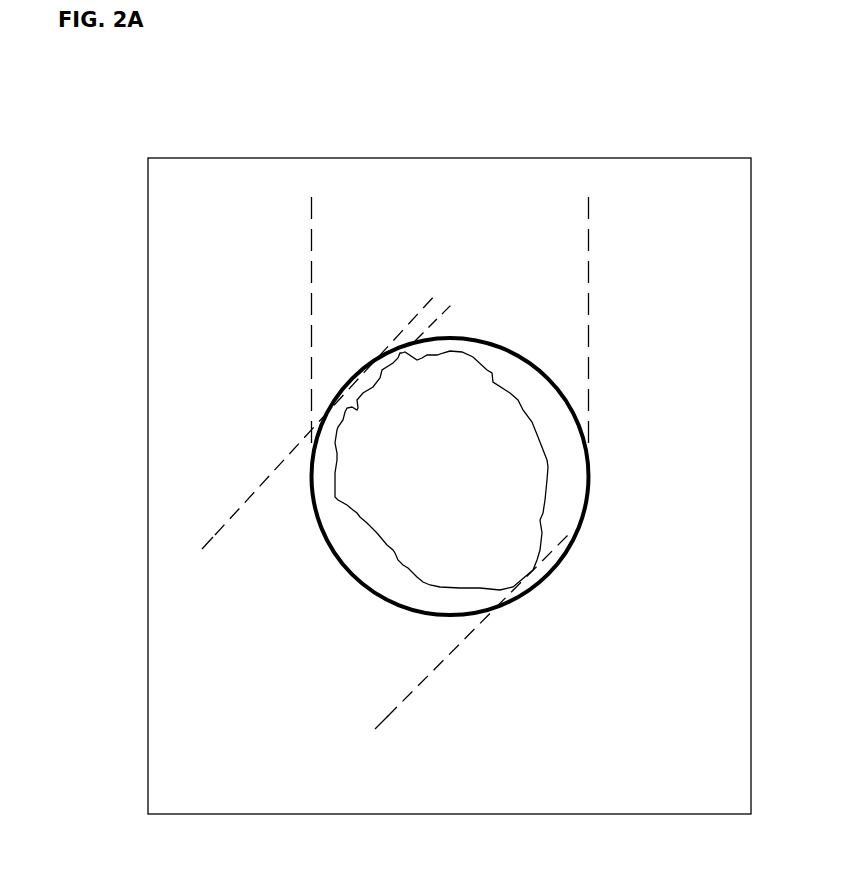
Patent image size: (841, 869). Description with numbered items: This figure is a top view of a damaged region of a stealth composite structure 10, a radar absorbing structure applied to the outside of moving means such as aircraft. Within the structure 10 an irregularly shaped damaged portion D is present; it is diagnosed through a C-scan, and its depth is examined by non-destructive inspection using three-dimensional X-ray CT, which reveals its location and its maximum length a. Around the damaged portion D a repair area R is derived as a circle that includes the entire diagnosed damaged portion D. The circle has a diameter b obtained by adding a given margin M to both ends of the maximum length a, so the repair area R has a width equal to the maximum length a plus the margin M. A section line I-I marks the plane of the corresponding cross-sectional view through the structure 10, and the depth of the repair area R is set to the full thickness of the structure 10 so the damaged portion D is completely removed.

The stealth composite structure 10 is at (667, 185).
The repair area R is at (590, 498).
The damaged portion D is at (495, 543).
The maximum length a is at (208, 545).
The diameter b is at (312, 215).
The margin M is at (420, 275).
The section line I- I is at (797, 774).